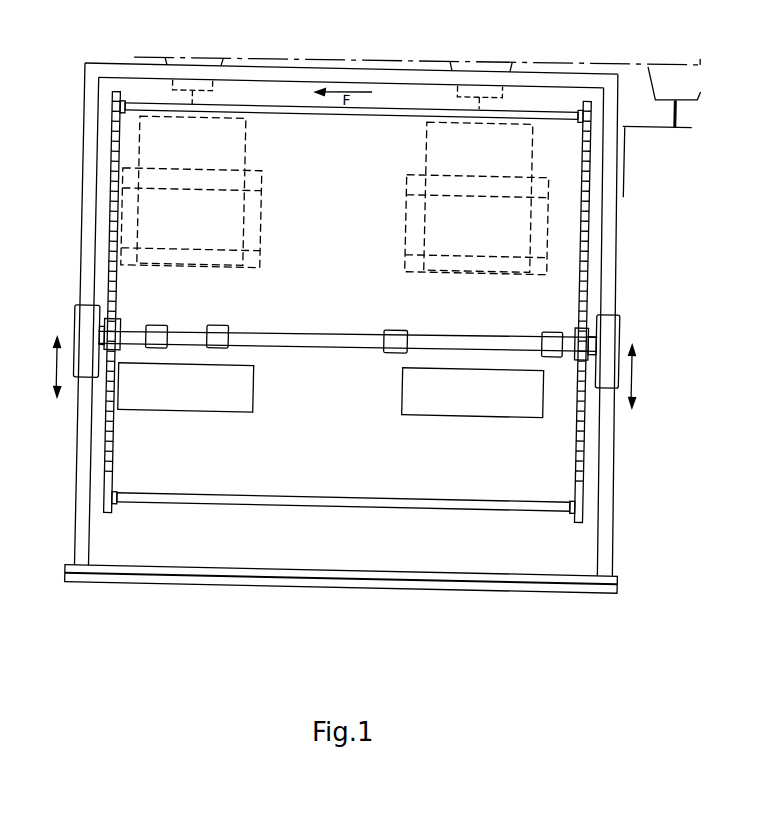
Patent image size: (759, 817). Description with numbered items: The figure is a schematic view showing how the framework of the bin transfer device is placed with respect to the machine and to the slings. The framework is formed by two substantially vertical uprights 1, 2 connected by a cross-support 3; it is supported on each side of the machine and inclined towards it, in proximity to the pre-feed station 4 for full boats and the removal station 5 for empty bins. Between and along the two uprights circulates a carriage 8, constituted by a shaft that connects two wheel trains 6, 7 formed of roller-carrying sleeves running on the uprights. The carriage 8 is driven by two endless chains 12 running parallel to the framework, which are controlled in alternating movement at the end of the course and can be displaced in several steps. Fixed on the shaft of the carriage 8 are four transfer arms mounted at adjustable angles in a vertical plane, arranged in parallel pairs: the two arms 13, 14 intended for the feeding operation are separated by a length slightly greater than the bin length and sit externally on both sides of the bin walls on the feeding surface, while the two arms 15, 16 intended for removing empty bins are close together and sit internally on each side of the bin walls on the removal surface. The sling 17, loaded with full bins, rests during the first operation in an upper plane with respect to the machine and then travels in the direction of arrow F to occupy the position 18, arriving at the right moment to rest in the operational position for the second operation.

The upright 1 is at (610, 449).
The upright 2 is at (95, 450).
The cross-support 3 is at (361, 74).
The pre-feed station 4 is at (477, 382).
The removal station 5 is at (202, 383).
The wheel train 6 is at (613, 334).
The wheel train 7 is at (94, 338).
The carriage 8 is at (321, 337).
The endless chain 12 is at (587, 202).
The transfer arm 13 is at (559, 333).
The transfer arm 14 is at (403, 336).
The transfer arm 15 is at (228, 335).
The transfer arm 16 is at (163, 332).
The sling 17 is at (477, 198).
The sling position 18 is at (192, 192).